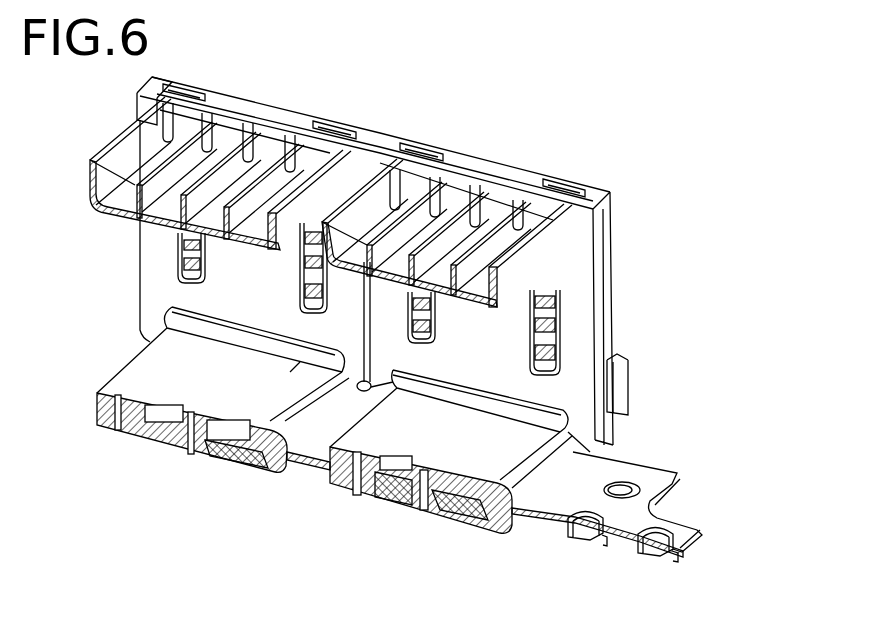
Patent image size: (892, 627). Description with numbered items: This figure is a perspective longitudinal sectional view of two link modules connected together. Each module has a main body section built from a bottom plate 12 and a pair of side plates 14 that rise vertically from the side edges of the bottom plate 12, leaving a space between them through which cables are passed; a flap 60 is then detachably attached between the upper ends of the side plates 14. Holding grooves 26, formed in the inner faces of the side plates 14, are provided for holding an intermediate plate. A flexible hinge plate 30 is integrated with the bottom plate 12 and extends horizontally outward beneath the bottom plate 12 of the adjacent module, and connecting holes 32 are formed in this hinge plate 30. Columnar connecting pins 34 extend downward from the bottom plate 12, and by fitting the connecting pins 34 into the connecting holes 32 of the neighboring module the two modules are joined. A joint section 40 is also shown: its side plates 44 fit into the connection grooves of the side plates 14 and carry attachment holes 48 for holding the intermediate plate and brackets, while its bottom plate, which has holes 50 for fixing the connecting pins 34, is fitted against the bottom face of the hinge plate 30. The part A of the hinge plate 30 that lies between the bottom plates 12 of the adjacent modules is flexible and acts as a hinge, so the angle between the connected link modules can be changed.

The side plates 14 is at (157, 267).
The flap 60 is at (222, 178).
The attachment holes 48 is at (560, 288).
The holding grooves 26 is at (558, 327).
The hinge plate 30 is at (653, 476).
The holes 50 is at (172, 440).
The connecting pins 34 is at (192, 447).
The joint section 40 is at (247, 452).
The part of the hinge plate A is at (321, 428).
The bottom plate 12 is at (457, 447).
The side plates 44 is at (470, 520).
The connecting holes 32 is at (587, 535).